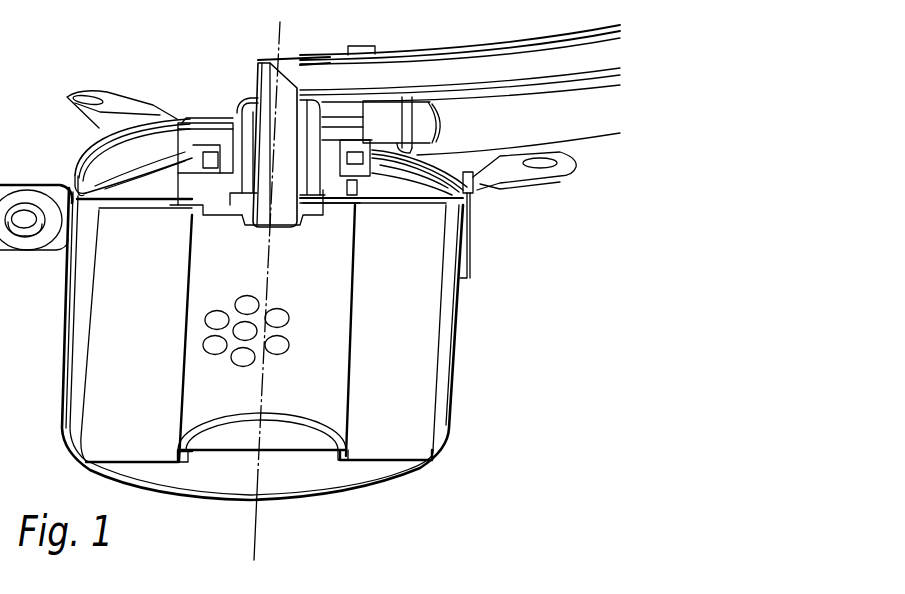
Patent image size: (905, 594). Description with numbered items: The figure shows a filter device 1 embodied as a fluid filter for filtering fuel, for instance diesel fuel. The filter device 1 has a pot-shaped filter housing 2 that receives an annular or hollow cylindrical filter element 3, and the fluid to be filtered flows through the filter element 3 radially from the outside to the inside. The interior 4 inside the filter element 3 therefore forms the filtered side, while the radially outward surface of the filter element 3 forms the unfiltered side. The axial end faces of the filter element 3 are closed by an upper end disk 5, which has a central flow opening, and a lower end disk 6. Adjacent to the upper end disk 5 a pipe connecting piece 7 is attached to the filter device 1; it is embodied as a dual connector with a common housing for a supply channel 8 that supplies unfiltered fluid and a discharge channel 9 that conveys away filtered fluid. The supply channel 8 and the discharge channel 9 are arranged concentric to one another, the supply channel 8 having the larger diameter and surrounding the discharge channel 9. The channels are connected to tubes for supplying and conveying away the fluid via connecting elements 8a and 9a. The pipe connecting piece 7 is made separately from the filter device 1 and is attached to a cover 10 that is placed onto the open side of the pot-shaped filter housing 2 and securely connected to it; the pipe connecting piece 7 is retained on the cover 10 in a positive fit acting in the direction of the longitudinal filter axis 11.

The filter device 1 is at (79, 53).
The filter housing 2 is at (450, 385).
The filter element 3 is at (100, 383).
The interior 4 is at (238, 398).
The end disk 5 is at (389, 205).
The end disk 6 is at (260, 452).
The pipe connecting piece 7 is at (255, 70).
The supply channel 8 is at (243, 153).
The connecting element 8a is at (388, 113).
The discharge channel 9 is at (277, 97).
The connecting element 9a is at (375, 63).
The cover 10 is at (413, 183).
The longitudinal filter axis 11 is at (258, 528).